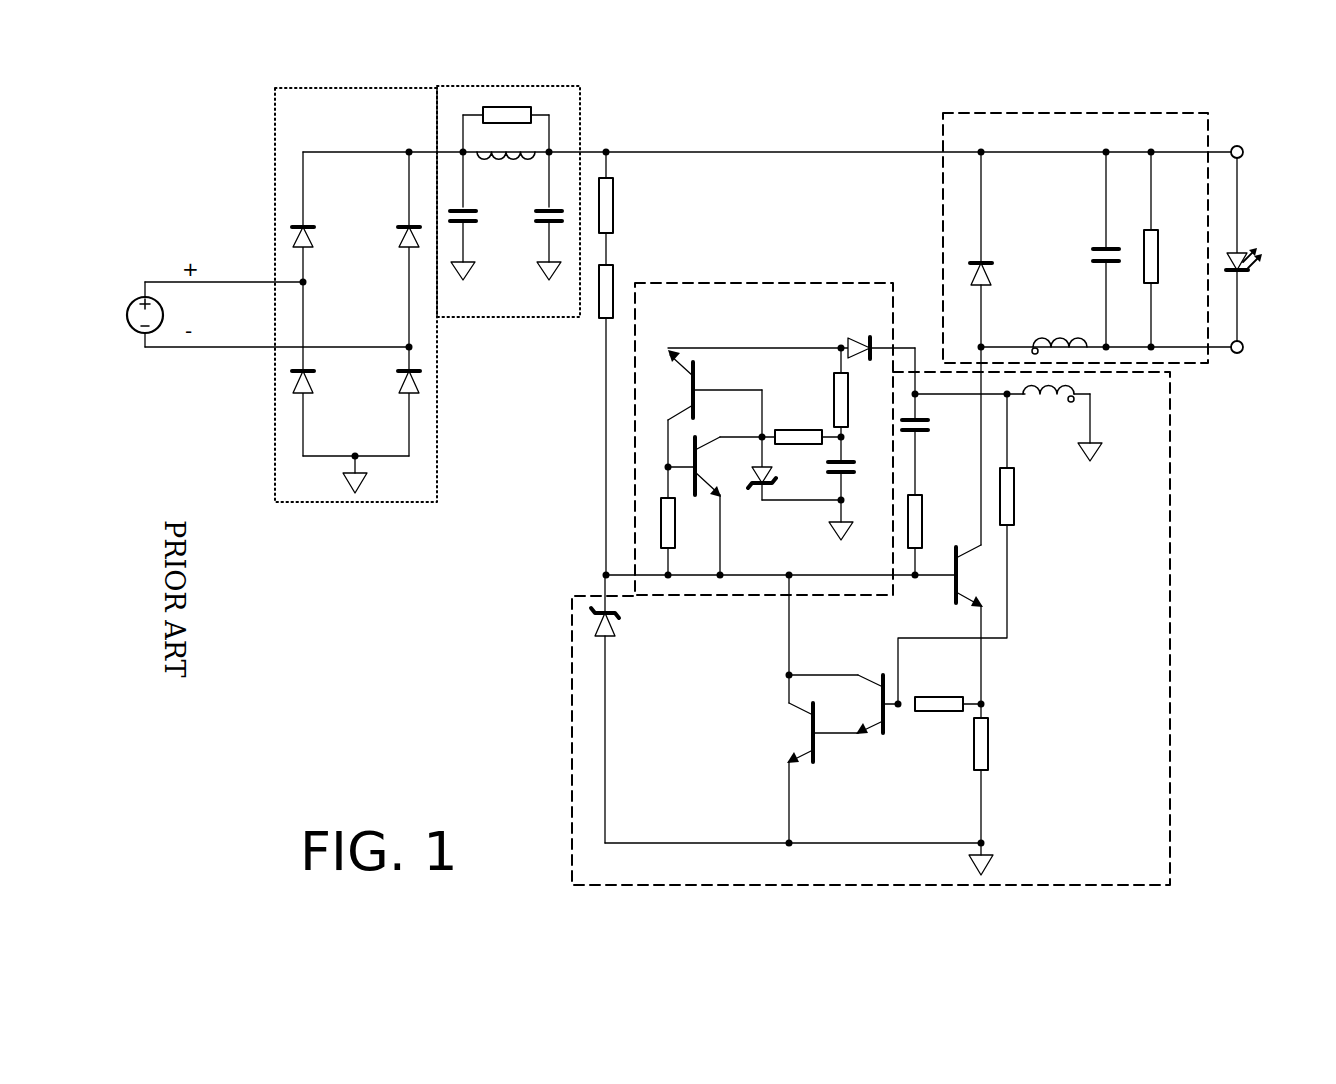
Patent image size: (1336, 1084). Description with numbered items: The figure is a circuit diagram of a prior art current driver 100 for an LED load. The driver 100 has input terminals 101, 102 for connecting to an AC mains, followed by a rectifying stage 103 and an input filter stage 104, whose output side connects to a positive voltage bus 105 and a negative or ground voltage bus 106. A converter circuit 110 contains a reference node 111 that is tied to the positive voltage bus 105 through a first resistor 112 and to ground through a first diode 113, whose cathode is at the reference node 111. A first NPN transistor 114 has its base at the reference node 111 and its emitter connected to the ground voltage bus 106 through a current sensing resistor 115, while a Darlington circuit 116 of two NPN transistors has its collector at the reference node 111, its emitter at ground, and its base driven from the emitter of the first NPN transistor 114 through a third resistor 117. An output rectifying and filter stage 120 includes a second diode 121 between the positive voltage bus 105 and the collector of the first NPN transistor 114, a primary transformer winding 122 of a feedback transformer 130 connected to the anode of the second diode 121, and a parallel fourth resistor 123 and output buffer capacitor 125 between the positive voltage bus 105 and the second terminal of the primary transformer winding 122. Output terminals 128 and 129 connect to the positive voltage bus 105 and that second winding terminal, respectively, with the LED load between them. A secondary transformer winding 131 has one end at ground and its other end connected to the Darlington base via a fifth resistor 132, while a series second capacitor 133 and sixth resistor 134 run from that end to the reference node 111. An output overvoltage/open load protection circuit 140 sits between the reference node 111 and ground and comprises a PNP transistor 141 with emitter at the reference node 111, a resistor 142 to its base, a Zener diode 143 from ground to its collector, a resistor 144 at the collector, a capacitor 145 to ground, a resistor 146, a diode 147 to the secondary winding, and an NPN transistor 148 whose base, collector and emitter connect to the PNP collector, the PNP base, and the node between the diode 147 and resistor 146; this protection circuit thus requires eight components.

The current driver 100 is at (340, 650).
The input terminal 101 is at (226, 268).
The input terminal 102 is at (279, 358).
The rectifying stage 103 is at (275, 100).
The input filter stage 104 is at (538, 196).
The positive voltage bus 105 is at (776, 152).
The ground voltage bus 106 is at (506, 258).
The converter circuit 110 is at (572, 740).
The reference node 111 is at (606, 575).
The first resistor 112 is at (623, 362).
The first diode 113 is at (623, 709).
The first NPN transistor 114 is at (978, 525).
The current sensing resistor 115 is at (999, 773).
The Darlington circuit 116 is at (842, 748).
The third resistor 117 is at (950, 691).
The output rectifying and filter stage 120 is at (943, 116).
The second diode 121 is at (1001, 249).
The primary transformer winding 122 is at (1059, 331).
The fourth resistor 123 is at (1168, 249).
The output buffer capacitor 125 is at (1087, 249).
The output terminal 128 is at (1255, 154).
The output terminal 129 is at (1255, 349).
The feedback transformer 130 is at (1097, 380).
The secondary transformer winding 131 is at (1062, 424).
The fifth resistor 132 is at (975, 549).
The second capacitor 133 is at (931, 444).
The sixth resistor 134 is at (934, 535).
The output overvoltage/open load protection circuit 140 is at (776, 283).
The PNP transistor 141 is at (720, 506).
The resistor 142 is at (688, 521).
The Zener diode 143 is at (794, 468).
The resistor 144 is at (802, 420).
The capacitor 145 is at (856, 488).
The resistor 146 is at (859, 392).
The diode 147 is at (878, 350).
The NPN transistor 148 is at (707, 408).